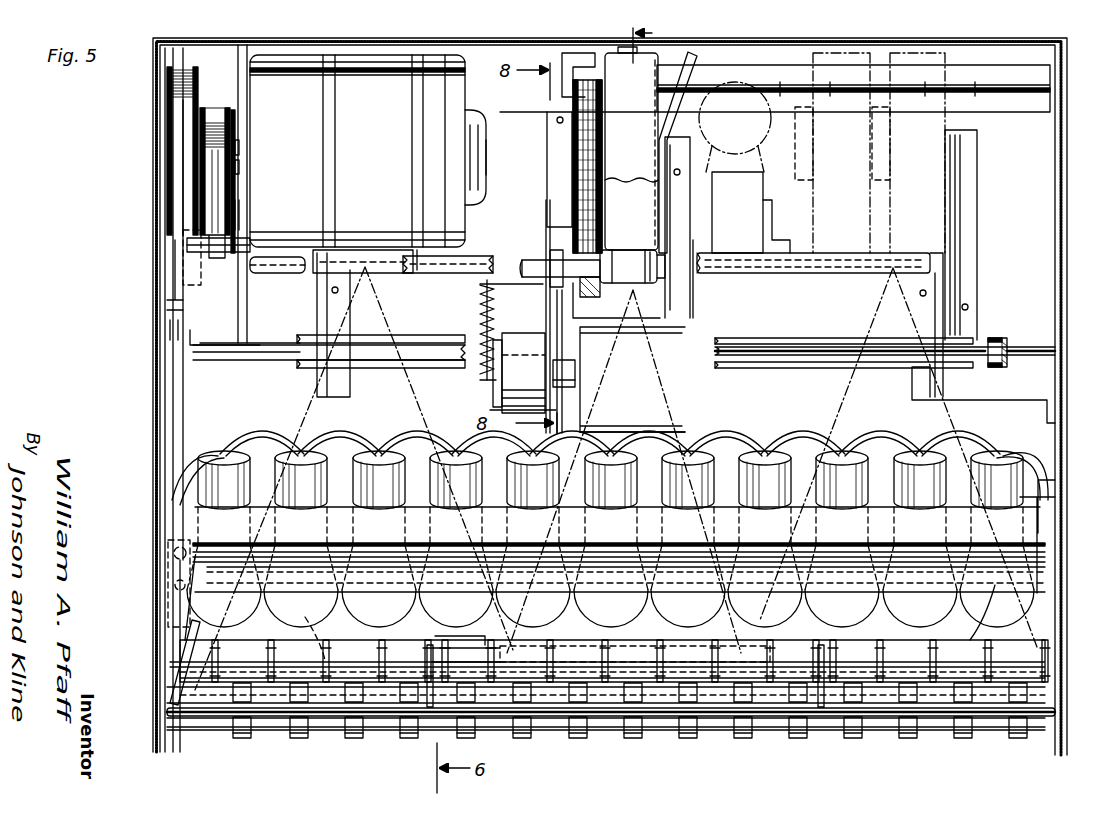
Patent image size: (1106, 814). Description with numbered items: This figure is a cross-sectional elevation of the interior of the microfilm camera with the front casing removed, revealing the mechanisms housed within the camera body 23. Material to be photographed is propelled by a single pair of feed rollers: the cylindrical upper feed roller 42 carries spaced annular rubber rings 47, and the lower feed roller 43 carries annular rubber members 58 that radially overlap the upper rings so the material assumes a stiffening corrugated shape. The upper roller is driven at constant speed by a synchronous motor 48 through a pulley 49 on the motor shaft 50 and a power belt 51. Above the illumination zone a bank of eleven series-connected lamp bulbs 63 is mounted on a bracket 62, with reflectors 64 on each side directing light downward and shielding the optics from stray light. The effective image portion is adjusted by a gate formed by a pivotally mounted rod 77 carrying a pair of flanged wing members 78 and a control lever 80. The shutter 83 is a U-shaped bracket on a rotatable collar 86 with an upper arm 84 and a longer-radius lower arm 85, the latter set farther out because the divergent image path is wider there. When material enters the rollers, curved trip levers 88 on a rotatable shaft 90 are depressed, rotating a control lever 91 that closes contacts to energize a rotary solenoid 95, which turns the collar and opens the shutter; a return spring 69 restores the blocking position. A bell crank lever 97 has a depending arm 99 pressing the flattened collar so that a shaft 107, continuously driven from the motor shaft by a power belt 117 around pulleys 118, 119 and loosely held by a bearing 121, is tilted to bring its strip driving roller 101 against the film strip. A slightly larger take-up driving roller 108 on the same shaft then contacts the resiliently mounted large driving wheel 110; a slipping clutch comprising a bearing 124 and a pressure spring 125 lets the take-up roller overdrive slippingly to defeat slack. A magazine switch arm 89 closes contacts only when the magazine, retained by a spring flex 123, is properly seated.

The camera body 23 is at (1067, 160).
The upper feed roller 42 is at (358, 650).
The lower feed roller 43 is at (227, 723).
The annular rubber rings 47 is at (312, 625).
The synchronous motor 48 is at (435, 93).
The pulley 49 is at (198, 86).
The motor shaft 50 is at (239, 148).
The power belt 51 is at (185, 293).
The annular rubber members 58 is at (297, 737).
The bracket 62 is at (338, 490).
The lamp bulbs 63 is at (760, 150).
The reflectors 64 is at (975, 614).
The return spring 69 is at (480, 318).
The rod 77 is at (285, 358).
The flanged wing members 78 is at (428, 342).
The control lever 80 is at (1004, 340).
The shutter 83 is at (682, 385).
The upper arm 84 is at (665, 332).
The lower arm 85 is at (650, 428).
The rotatable collar 86 is at (575, 368).
The trip levers 88 is at (428, 702).
The arm 89 is at (603, 62).
The rotatable shaft 90 is at (322, 715).
The control lever 91 is at (190, 633).
The rotary solenoid 95 is at (521, 345).
The bell crank lever 97 is at (558, 320).
The depending arm 99 is at (563, 348).
The strip driving roller 101 is at (665, 268).
The shaft 107 is at (283, 275).
The take-up driving roller 108 is at (620, 283).
The large driving wheel 110 is at (600, 165).
The power belt 117 is at (217, 194).
The pulley 118 is at (234, 118).
The pulley 119 is at (232, 216).
The bearing 121 is at (262, 240).
The spring flex 123 is at (622, 46).
The bearing 124 is at (552, 252).
The pressure spring 125 is at (590, 293).